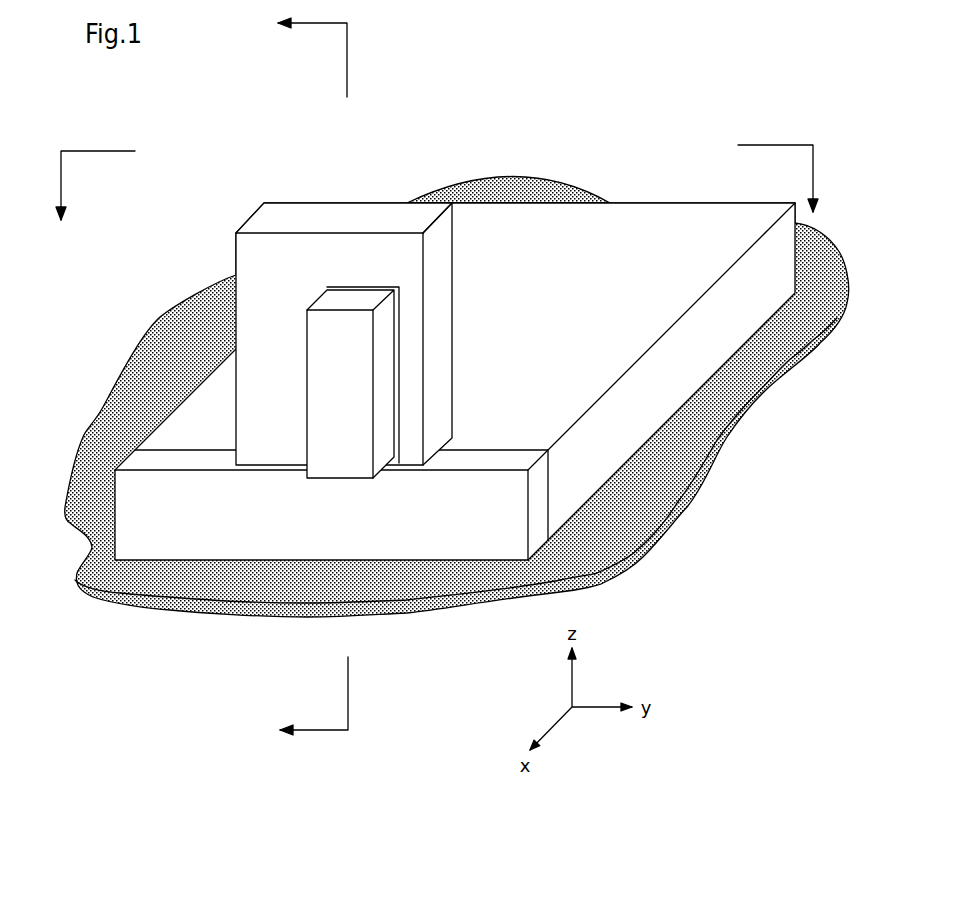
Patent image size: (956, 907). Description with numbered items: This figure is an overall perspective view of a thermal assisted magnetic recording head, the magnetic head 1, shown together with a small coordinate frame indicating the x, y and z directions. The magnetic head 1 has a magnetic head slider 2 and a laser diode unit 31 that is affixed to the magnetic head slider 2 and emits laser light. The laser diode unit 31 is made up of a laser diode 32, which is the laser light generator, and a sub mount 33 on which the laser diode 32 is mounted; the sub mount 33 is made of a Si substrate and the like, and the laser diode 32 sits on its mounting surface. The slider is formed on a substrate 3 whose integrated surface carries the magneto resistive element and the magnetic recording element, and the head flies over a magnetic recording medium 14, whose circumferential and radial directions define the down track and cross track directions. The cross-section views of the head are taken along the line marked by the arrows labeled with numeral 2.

The magnetic head 1 is at (400, 157).
The magnetic head slider 2 is at (667, 193).
The substrate 3 is at (735, 342).
The magnetic recording medium 14 is at (105, 415).
The laser diode unit 31 is at (344, 293).
The laser diode 32 is at (313, 320).
The sub mount 33 is at (348, 210).